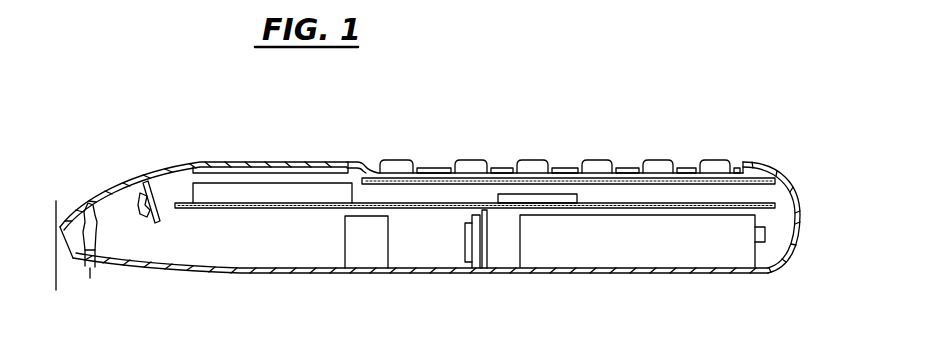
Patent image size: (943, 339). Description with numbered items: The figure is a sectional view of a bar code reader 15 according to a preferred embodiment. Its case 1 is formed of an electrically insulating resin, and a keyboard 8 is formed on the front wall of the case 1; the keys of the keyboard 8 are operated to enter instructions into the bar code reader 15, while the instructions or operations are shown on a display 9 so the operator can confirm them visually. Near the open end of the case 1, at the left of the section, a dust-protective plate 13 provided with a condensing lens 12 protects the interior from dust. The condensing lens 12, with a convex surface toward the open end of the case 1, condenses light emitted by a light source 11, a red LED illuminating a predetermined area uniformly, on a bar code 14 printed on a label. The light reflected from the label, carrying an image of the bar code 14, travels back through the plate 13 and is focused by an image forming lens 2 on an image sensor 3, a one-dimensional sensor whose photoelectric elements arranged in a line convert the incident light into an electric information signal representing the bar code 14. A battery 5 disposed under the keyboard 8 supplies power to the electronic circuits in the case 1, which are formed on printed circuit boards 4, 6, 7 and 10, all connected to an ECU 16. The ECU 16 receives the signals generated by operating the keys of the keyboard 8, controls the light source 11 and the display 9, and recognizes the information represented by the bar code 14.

The case 1 is at (248, 278).
The image forming lens 2 is at (363, 263).
The image sensor 3 is at (473, 263).
The printed circuit board 4 is at (487, 257).
The battery 5 is at (715, 255).
The printed circuit board 6 is at (762, 178).
The printed circuit board 7 is at (768, 203).
The keyboard 8 is at (397, 168).
The display 9 is at (315, 192).
The printed circuit board 10 is at (150, 197).
The light source 11 is at (140, 203).
The condensing lens 12 is at (85, 240).
The dust-protective plate 13 is at (97, 248).
The bar code 14 is at (56, 202).
The bar code reader 15 is at (565, 91).
The ECU 16 is at (553, 200).